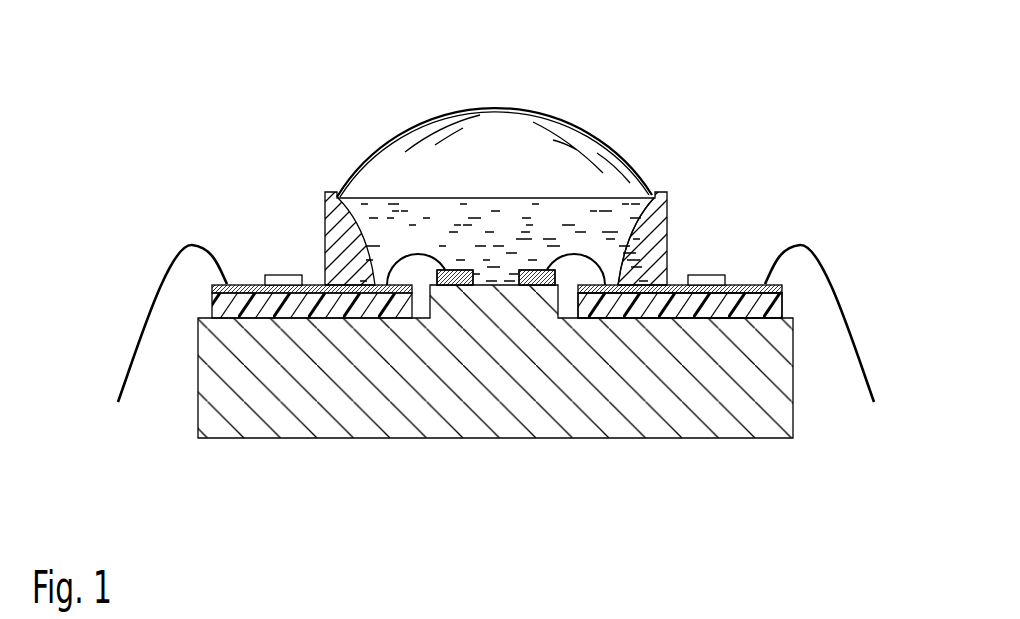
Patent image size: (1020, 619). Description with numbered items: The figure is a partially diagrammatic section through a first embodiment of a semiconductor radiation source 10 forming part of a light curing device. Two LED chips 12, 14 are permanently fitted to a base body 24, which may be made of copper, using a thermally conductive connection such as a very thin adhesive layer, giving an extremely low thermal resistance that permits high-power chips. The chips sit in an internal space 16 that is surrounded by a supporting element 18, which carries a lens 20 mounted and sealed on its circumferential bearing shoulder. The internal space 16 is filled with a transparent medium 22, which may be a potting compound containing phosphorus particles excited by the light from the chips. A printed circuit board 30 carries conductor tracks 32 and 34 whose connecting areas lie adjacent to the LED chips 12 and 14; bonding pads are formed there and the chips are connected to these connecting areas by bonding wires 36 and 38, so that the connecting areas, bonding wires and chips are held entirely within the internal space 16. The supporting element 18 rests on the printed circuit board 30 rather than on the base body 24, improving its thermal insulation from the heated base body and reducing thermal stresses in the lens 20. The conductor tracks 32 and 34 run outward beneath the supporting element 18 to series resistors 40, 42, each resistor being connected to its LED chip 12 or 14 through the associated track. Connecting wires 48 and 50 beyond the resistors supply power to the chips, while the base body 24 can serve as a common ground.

The semiconductor radiation source 10 is at (707, 90).
The LED chip 12 is at (458, 285).
The LED chip 14 is at (548, 285).
The internal space 16 is at (627, 203).
The supporting element 18 is at (657, 217).
The lens 20 is at (505, 132).
The transparent medium 22 is at (380, 208).
The base body 24 is at (240, 413).
The printed circuit board 30 is at (662, 307).
The conductor track 32 is at (318, 285).
The conductor track 34 is at (660, 308).
The bonding wire 36 is at (419, 253).
The bonding wire 38 is at (575, 253).
The series resistor 40 is at (270, 275).
The series resistor 42 is at (722, 275).
The connecting wire 48 is at (145, 310).
The connecting wire 50 is at (847, 303).